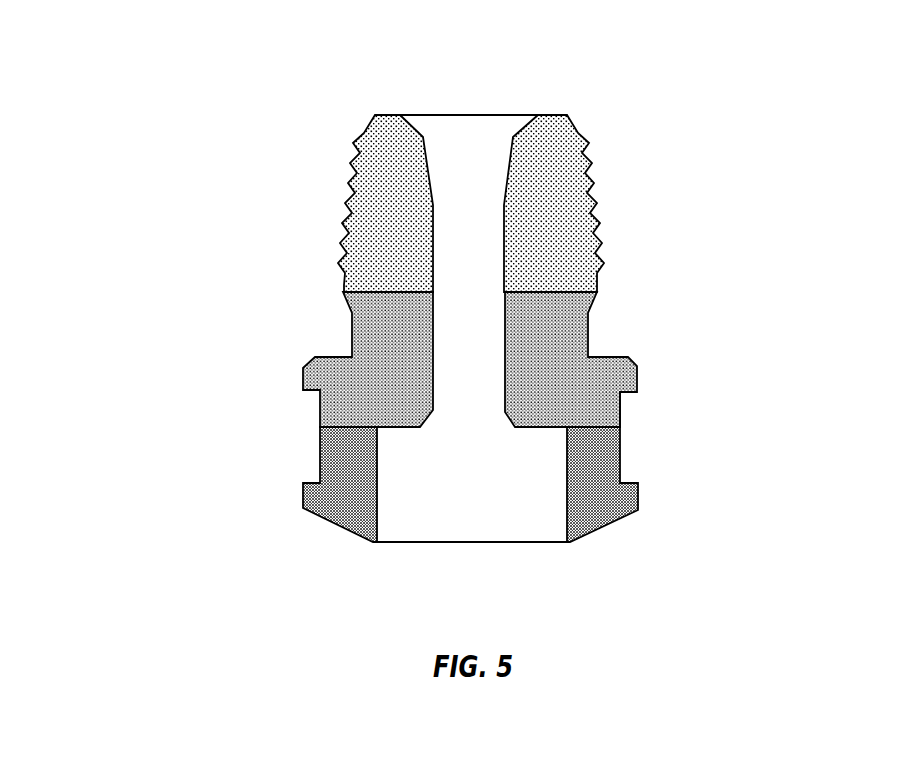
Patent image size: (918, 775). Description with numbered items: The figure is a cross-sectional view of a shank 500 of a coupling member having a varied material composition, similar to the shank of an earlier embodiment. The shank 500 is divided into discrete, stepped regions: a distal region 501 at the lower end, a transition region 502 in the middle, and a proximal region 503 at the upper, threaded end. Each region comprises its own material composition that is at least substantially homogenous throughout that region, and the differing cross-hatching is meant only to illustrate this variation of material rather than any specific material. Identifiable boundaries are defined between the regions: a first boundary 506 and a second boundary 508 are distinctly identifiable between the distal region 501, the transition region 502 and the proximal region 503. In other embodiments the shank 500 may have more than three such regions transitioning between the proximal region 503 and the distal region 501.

The shank 500 is at (178, 97).
The distal region 501 is at (329, 474).
The transition region 502 is at (374, 349).
The proximal region 503 is at (378, 229).
The first boundary 506 is at (612, 421).
The second boundary 508 is at (558, 291).